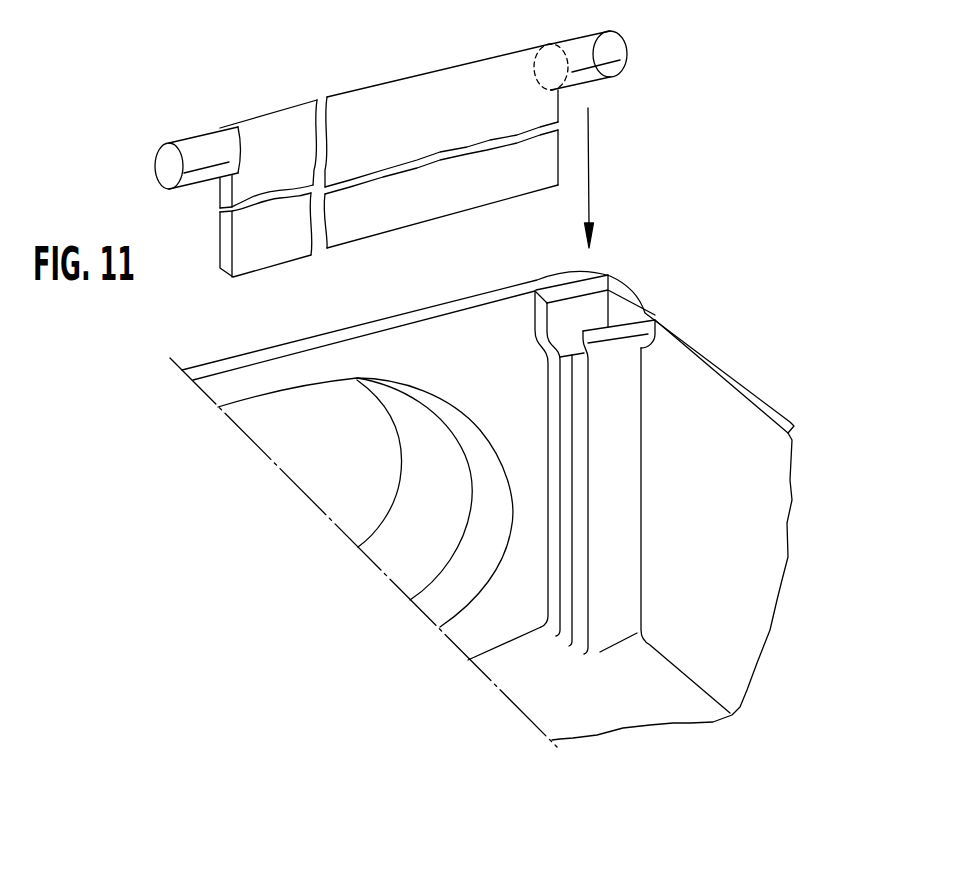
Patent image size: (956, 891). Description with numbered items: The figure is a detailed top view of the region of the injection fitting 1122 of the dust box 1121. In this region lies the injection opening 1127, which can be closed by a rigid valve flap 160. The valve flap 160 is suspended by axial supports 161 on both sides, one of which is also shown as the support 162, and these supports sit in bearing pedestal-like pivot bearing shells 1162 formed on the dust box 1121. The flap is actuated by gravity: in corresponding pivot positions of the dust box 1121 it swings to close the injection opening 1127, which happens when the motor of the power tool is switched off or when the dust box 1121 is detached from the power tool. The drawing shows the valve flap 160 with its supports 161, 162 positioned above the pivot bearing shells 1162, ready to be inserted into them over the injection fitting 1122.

The valve flap 160 is at (423, 196).
The axial supports 161 is at (612, 50).
The left cylindrical end of blade 162 is at (197, 143).
The dust box 1121 is at (749, 333).
The injection fitting 1122 is at (410, 425).
The injection opening 1127 is at (307, 458).
The pivot bearing shells 1162 is at (617, 307).